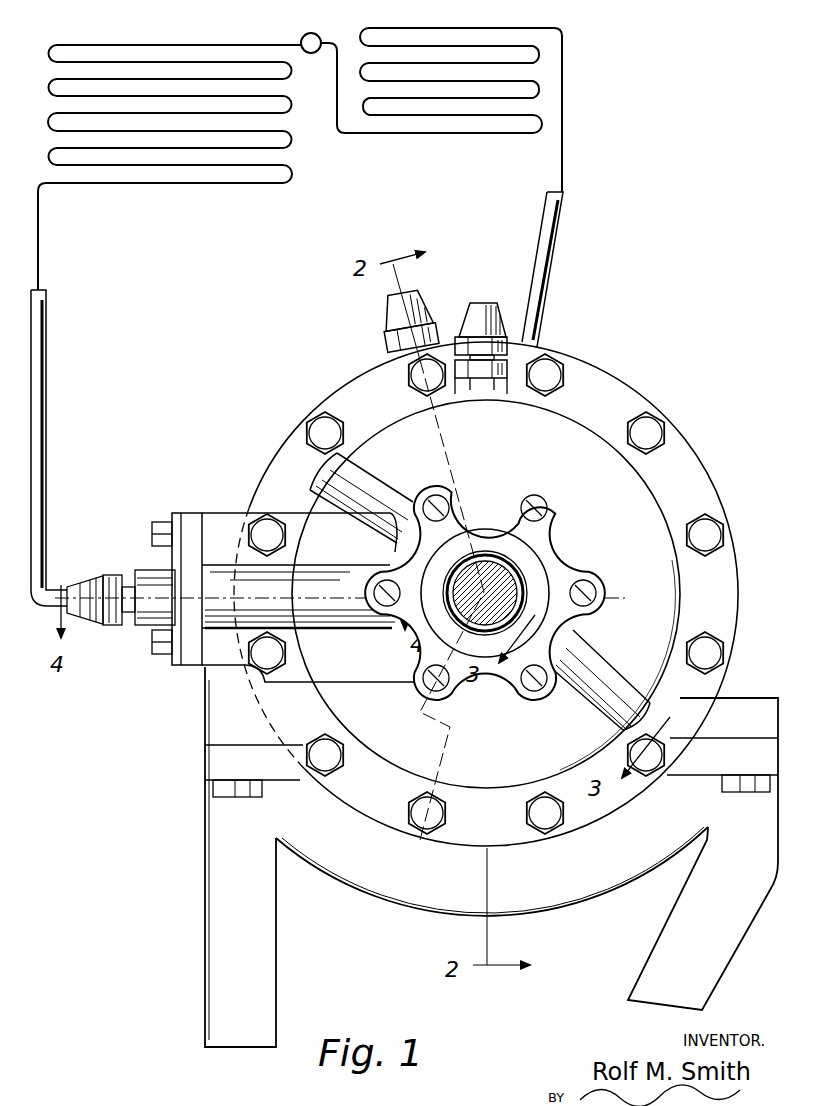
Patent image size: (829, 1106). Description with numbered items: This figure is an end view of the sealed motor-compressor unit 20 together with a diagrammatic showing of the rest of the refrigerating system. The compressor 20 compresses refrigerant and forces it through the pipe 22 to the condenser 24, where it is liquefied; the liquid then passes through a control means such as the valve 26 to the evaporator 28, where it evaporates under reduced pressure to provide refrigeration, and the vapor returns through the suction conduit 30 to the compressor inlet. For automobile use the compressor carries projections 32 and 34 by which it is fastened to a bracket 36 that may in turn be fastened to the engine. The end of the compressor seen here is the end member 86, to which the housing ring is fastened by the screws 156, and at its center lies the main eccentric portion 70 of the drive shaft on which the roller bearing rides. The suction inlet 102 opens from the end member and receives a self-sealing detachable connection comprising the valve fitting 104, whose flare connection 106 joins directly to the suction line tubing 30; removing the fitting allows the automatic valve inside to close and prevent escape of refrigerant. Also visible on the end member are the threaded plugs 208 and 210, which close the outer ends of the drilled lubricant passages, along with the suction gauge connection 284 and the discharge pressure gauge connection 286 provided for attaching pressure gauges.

The sealed motor-compressor unit 20 is at (617, 383).
The pipe 22 is at (553, 258).
The condenser 24 is at (487, 135).
The valve 26 is at (301, 40).
The evaporator 28 is at (290, 148).
The suction conduit 30 is at (47, 408).
The projection 32 is at (217, 760).
The projection 34 is at (757, 705).
The bracket 36 is at (227, 988).
The main eccentric portion 70 is at (505, 568).
The end member 86 is at (650, 498).
The suction inlet 102 is at (228, 512).
The valve fitting 104 is at (178, 512).
The flare connection 106 is at (112, 575).
The screws 156 is at (712, 528).
The threaded plug 208 is at (650, 705).
The threaded plug 210 is at (312, 483).
The suction gauge connection 284 is at (479, 305).
The discharge pressure gauge connection 286 is at (396, 316).